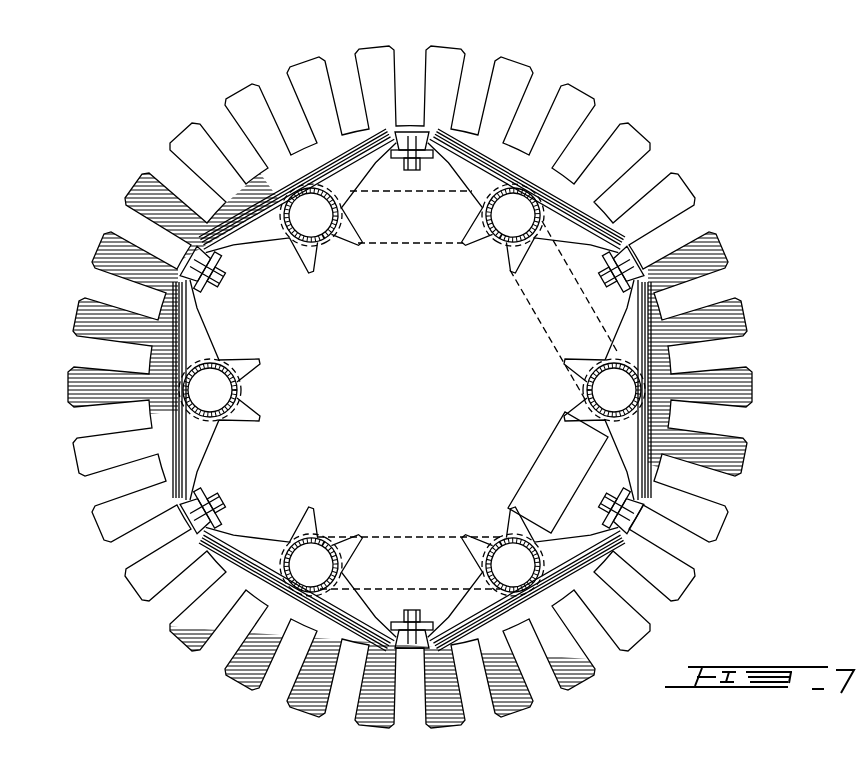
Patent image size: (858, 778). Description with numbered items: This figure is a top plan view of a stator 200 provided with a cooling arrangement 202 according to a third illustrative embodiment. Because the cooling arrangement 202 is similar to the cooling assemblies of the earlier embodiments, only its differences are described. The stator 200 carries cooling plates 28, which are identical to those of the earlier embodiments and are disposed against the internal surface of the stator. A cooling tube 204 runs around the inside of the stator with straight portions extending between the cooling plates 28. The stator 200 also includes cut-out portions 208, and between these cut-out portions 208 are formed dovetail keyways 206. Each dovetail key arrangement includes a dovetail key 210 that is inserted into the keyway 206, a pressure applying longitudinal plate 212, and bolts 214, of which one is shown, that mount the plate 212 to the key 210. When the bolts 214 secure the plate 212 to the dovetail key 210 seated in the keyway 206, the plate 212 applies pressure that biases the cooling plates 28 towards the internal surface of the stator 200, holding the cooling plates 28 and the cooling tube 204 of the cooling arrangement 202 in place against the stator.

The stator 200 is at (745, 214).
The cooling plates 28 is at (658, 332).
The cooling arrangement 202 is at (570, 386).
The cooling tube 204 is at (552, 481).
The dovetail keyways 206 is at (392, 151).
The cut-out portions 208 is at (488, 170).
The dovetail key 210 is at (432, 130).
The pressure applying longitudinal plate 212 is at (431, 166).
The bolts 214 is at (410, 170).